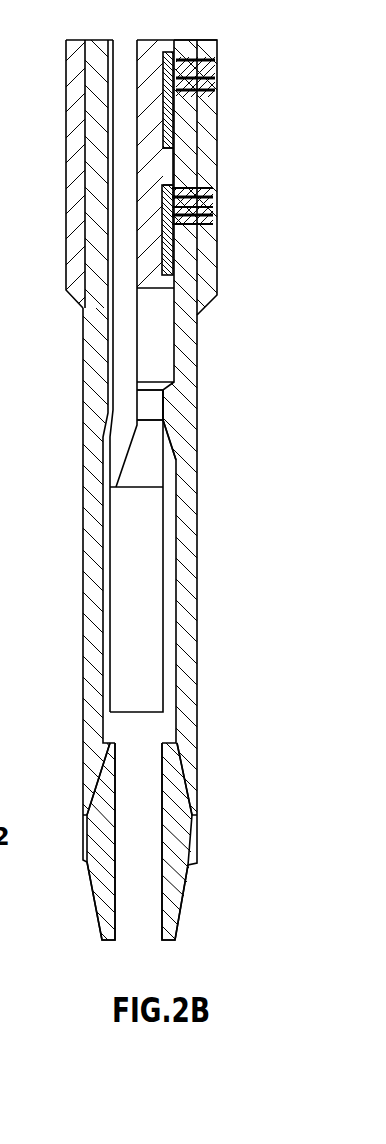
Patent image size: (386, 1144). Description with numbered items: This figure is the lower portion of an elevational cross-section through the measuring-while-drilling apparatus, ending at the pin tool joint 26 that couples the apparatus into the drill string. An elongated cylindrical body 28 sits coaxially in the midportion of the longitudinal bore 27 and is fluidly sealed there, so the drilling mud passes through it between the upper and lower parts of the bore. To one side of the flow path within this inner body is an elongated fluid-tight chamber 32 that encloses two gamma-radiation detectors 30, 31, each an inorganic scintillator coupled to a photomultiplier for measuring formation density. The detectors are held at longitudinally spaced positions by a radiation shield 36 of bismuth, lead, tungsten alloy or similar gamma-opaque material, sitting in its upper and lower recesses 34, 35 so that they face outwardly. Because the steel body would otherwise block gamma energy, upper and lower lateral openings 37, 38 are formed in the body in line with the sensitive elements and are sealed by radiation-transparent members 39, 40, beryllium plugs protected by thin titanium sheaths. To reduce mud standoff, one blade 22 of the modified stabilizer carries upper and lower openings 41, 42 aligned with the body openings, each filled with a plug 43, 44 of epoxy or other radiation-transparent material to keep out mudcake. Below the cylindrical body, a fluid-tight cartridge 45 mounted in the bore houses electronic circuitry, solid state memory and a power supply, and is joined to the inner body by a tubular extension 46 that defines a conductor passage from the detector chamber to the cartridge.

The blade 22 is at (208, 296).
The pin tool joint 26 is at (178, 888).
The longitudinal bore 27 is at (175, 476).
The elongated cylindrical body 28 is at (108, 93).
The gamma-radiation detector 30 is at (168, 92).
The gamma-radiation detector 31 is at (173, 227).
The fluid-tight chamber 32 is at (213, 210).
The upper recess 34 is at (172, 130).
The lower recess 35 is at (210, 292).
The radiation shield 36 is at (140, 138).
The upper lateral opening 37 is at (193, 41).
The lower lateral opening 38 is at (215, 226).
The radiation-transparent member 39 is at (195, 78).
The radiation-transparent member 40 is at (213, 222).
The upper opening 41 is at (210, 88).
The lower opening 42 is at (212, 193).
The plug 43 is at (208, 62).
The plug 44 is at (213, 202).
The cartridge 45 is at (152, 603).
The tubular extension 46 is at (150, 403).